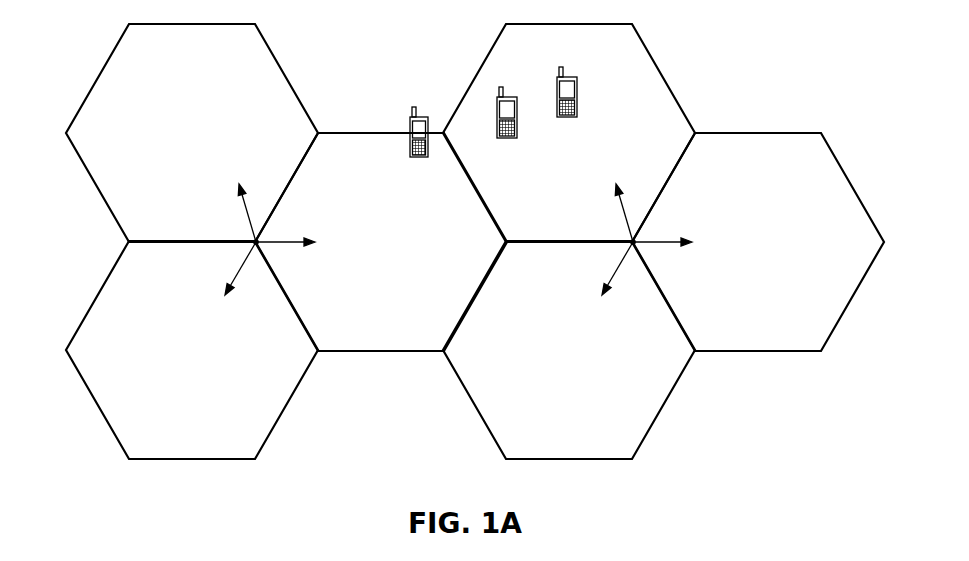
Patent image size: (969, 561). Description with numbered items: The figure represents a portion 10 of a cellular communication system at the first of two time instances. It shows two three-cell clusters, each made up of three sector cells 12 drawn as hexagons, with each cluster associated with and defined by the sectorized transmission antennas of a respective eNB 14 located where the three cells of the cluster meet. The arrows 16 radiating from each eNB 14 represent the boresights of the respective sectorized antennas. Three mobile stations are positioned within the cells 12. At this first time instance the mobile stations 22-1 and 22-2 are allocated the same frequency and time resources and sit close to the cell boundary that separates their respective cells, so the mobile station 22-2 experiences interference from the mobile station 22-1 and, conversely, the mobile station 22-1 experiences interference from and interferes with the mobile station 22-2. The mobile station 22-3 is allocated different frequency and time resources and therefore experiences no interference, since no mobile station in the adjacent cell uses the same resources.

The portion of a cellular communication system 10 is at (58, 39).
The cell 12 is at (283, 61).
The eNB 14 is at (262, 246).
The arrow 16 is at (246, 218).
The mobile station 22-1 is at (412, 159).
The mobile station 22-2 is at (510, 140).
The mobile station 22-3 is at (574, 118).